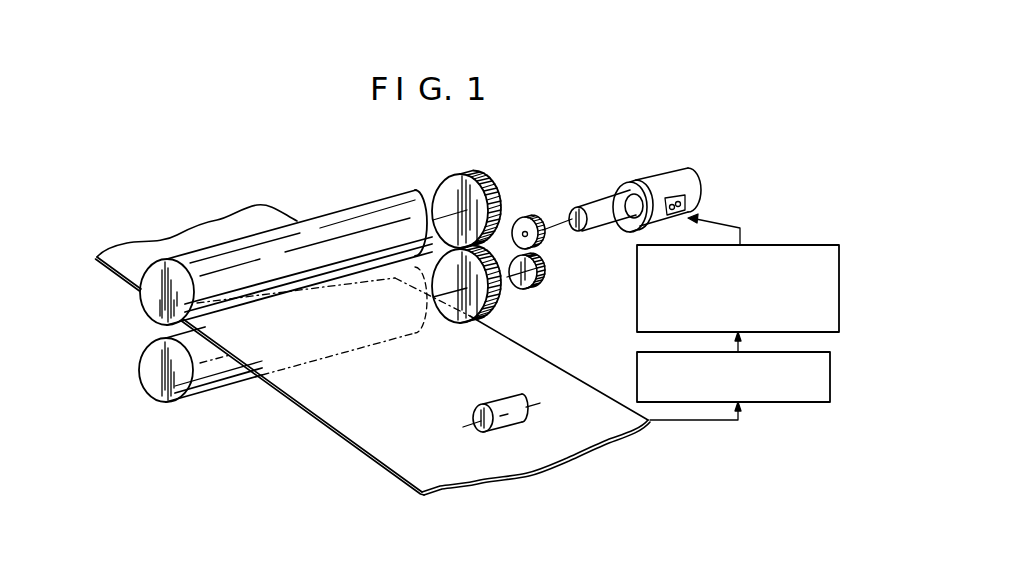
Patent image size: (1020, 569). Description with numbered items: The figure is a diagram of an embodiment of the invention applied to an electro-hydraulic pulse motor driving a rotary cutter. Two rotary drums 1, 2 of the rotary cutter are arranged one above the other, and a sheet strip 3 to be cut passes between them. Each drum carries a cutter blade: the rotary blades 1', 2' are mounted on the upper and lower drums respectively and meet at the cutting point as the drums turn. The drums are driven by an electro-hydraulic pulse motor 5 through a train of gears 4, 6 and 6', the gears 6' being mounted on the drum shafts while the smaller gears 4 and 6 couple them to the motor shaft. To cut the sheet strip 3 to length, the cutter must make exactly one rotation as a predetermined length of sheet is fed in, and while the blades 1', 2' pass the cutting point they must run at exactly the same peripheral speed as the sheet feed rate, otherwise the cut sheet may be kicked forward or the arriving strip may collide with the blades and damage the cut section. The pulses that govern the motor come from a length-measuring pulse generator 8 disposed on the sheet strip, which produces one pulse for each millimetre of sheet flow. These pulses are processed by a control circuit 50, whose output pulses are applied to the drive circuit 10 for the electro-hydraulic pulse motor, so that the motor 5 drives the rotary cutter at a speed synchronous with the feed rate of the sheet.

The rotary drum 1 is at (286, 248).
The rotary blade 1' is at (136, 307).
The rotary drum 2 is at (283, 352).
The rotary blade 2' is at (133, 367).
The sheet strip 3 is at (345, 442).
The gear 4 is at (531, 218).
The electro-hydraulic pulse motor 5 is at (641, 178).
The gear 6 is at (542, 271).
The gear 6' is at (483, 239).
The length-measuring pulse generator 8 is at (490, 402).
The drive circuit 10 is at (772, 245).
The control circuit 50 is at (777, 403).